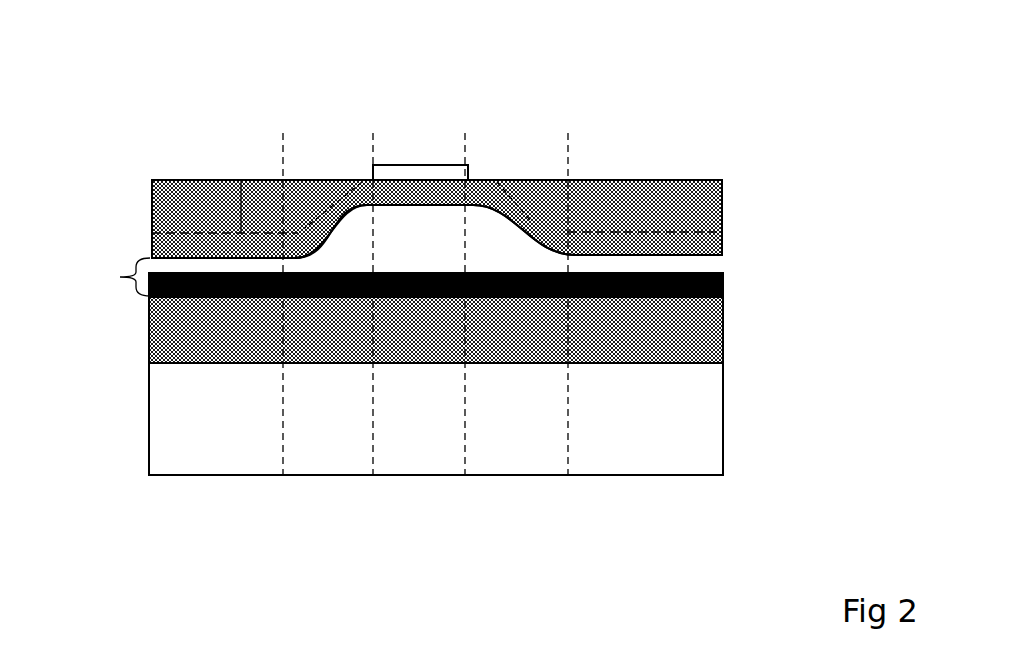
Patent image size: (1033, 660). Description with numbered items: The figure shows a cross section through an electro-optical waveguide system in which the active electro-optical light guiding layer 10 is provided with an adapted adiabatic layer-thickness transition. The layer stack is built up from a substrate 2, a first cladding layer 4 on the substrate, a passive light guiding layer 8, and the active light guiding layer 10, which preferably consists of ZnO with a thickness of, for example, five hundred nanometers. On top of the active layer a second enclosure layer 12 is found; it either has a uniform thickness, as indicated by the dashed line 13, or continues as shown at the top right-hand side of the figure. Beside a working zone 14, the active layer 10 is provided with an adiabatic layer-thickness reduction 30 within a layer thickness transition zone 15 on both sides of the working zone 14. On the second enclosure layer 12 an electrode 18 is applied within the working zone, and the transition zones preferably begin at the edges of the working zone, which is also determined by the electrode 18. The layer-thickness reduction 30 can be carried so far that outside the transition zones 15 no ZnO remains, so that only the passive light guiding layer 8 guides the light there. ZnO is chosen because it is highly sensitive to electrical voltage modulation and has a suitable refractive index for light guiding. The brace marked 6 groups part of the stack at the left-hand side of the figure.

The substrate 2 is at (183, 433).
The first cladding layer 4 is at (183, 340).
The active region 6 is at (102, 269).
The passive light guiding layer 8 is at (722, 288).
The active electro-optical light guiding layer 10 is at (722, 258).
The second enclosure layer 12 is at (177, 213).
The dashed line 13 is at (241, 180).
The working zone 14 is at (416, 450).
The layer thickness transition zone 15 is at (425, 304).
The electrode 18 is at (413, 165).
The adiabatic layer-thickness reduction 30 is at (531, 220).